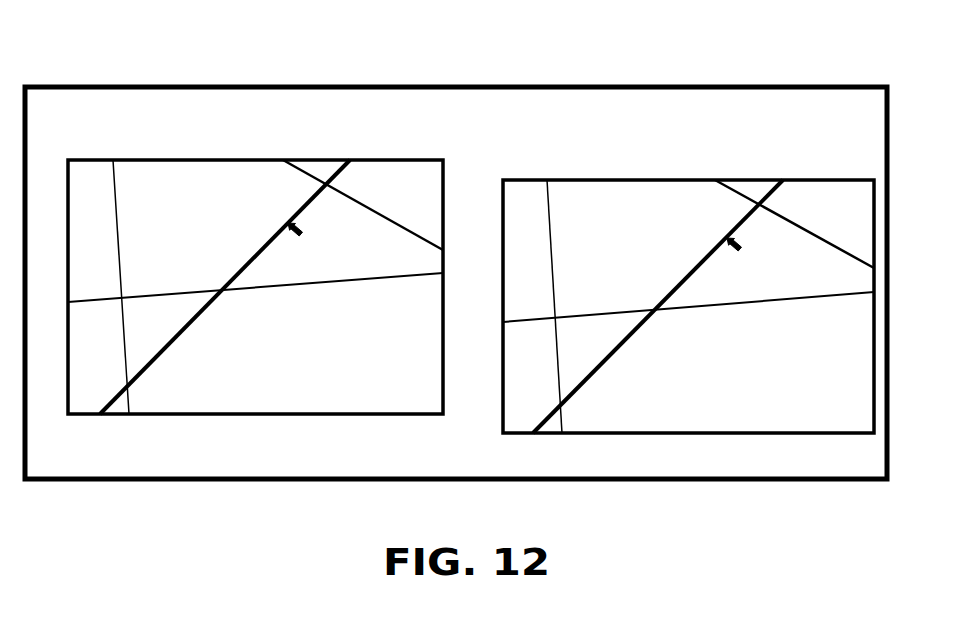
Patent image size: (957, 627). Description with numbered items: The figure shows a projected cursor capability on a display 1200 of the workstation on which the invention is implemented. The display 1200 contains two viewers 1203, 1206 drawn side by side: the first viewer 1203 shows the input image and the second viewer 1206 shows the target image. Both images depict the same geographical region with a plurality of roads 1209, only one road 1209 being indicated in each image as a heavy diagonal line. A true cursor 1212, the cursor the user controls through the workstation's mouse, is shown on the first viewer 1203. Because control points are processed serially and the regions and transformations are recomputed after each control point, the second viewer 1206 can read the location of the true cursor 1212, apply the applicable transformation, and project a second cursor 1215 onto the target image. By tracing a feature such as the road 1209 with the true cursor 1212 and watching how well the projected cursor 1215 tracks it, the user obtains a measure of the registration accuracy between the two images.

The display 1200 is at (123, 43).
The viewer 1203 is at (178, 158).
The second viewer 1206 is at (607, 178).
The road 1209 is at (266, 245).
The true cursor 1212 is at (300, 237).
The projected cursor 1215 is at (737, 252).